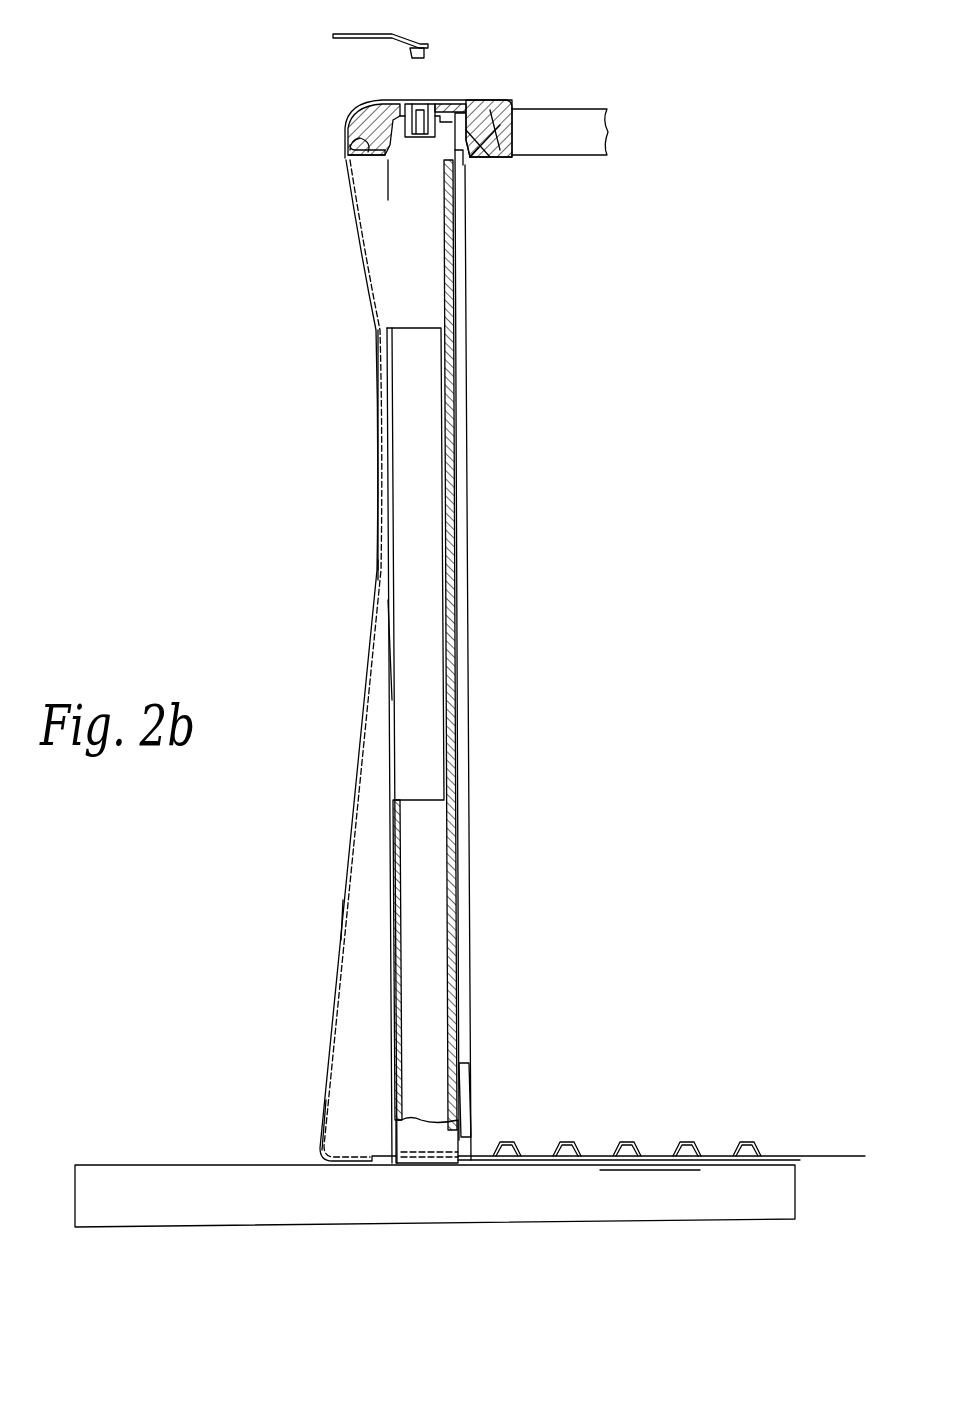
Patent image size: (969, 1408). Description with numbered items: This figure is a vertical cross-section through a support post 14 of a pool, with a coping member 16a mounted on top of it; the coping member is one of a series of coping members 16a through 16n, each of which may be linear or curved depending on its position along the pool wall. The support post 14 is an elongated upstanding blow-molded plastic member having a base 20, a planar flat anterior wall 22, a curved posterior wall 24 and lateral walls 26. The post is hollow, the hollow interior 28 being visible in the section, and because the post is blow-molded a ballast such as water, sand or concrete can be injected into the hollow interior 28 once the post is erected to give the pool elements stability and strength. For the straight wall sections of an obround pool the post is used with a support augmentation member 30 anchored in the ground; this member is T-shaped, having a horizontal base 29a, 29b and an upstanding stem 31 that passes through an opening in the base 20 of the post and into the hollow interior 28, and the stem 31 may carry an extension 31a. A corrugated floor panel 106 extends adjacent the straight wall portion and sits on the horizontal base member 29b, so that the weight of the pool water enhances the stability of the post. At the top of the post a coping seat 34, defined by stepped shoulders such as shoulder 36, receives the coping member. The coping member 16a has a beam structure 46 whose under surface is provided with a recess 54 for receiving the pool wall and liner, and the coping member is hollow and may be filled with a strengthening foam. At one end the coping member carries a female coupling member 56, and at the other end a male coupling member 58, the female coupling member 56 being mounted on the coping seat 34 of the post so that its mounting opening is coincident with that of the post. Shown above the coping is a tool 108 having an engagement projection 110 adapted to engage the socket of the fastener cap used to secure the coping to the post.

The support post 14 is at (323, 917).
The coping member 16a is at (343, 117).
The coping member 16n is at (343, 142).
The base 20 is at (316, 1113).
The anterior wall 22 is at (455, 420).
The posterior wall 24 is at (376, 428).
The lateral walls 26 is at (376, 565).
The hollow interior 28 is at (418, 315).
The horizontal base 29a is at (140, 1185).
The horizontal base member 29b is at (652, 1192).
The support augmentation member 30 is at (428, 914).
The stem 31 is at (445, 848).
The extension 31a is at (390, 672).
The coping seat 34 is at (360, 290).
The stepped shoulder 36 is at (390, 123).
The beam structure 46 is at (572, 126).
The recess 54 is at (458, 112).
The female coupling member 56 is at (492, 110).
The male coupling member 58 is at (483, 143).
The corrugated floor panel 106 is at (570, 1140).
The tool 108 is at (360, 34).
The engagement projection 110 is at (409, 60).